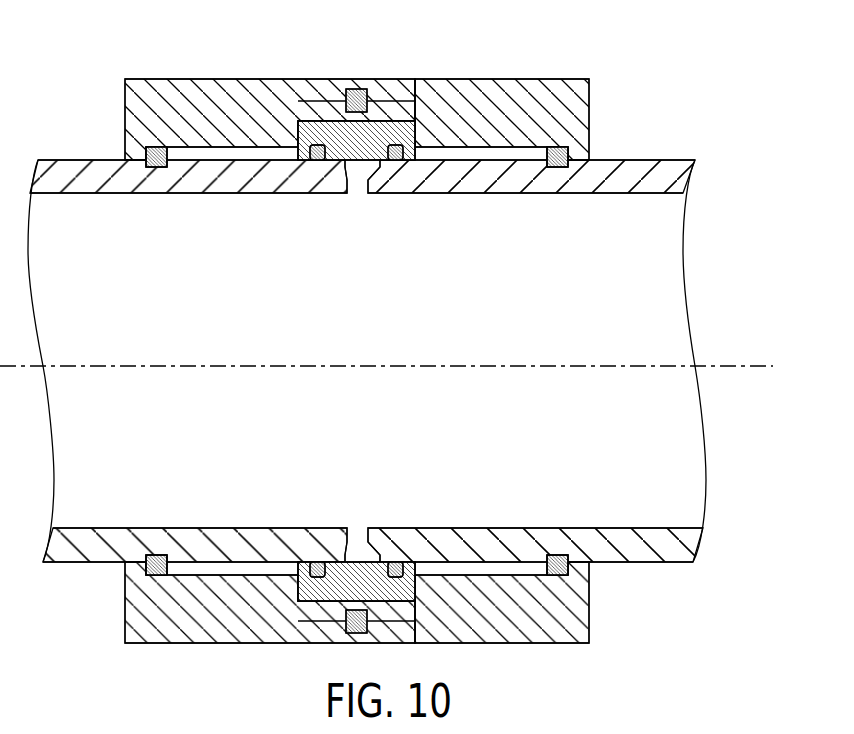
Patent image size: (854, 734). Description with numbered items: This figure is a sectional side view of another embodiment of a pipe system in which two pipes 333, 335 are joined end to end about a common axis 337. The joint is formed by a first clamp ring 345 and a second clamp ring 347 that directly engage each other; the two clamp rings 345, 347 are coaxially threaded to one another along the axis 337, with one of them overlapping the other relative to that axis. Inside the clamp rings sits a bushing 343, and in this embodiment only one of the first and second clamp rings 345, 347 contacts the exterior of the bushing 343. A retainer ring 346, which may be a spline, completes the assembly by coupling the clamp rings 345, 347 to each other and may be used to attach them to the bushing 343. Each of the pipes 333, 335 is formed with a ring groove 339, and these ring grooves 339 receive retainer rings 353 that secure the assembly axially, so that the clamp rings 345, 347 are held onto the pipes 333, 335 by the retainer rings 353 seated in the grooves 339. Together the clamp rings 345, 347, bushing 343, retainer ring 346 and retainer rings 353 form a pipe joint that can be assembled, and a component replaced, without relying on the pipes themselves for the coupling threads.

The pipe 333 is at (72, 165).
The pipe 335 is at (633, 167).
The axis 337 is at (744, 365).
The ring groove 339 is at (148, 151).
The bushing 343 is at (365, 138).
The first clamp ring 345 is at (170, 88).
The retainer ring 346 is at (347, 88).
The second clamp ring 347 is at (517, 88).
The retainer ring 353 is at (158, 162).